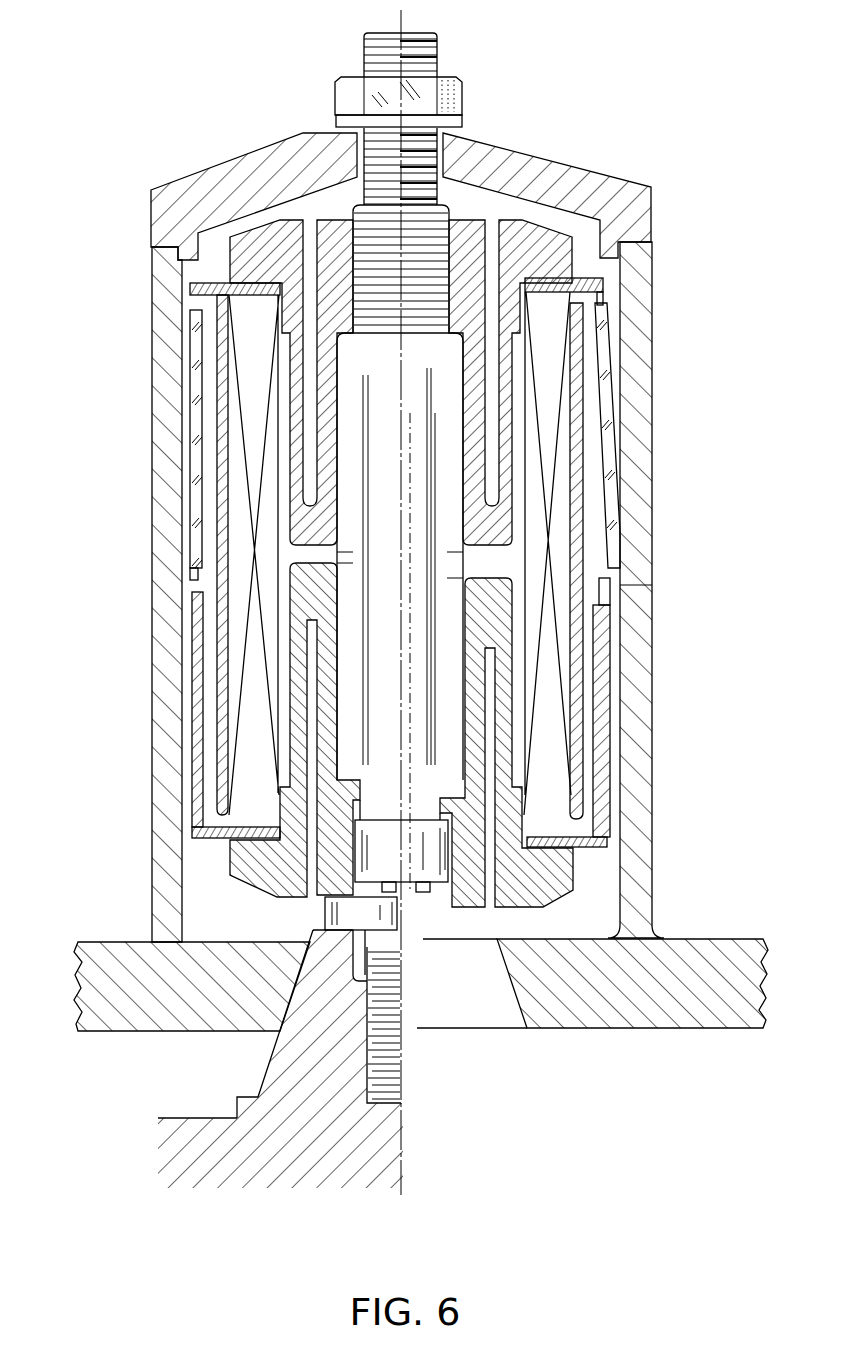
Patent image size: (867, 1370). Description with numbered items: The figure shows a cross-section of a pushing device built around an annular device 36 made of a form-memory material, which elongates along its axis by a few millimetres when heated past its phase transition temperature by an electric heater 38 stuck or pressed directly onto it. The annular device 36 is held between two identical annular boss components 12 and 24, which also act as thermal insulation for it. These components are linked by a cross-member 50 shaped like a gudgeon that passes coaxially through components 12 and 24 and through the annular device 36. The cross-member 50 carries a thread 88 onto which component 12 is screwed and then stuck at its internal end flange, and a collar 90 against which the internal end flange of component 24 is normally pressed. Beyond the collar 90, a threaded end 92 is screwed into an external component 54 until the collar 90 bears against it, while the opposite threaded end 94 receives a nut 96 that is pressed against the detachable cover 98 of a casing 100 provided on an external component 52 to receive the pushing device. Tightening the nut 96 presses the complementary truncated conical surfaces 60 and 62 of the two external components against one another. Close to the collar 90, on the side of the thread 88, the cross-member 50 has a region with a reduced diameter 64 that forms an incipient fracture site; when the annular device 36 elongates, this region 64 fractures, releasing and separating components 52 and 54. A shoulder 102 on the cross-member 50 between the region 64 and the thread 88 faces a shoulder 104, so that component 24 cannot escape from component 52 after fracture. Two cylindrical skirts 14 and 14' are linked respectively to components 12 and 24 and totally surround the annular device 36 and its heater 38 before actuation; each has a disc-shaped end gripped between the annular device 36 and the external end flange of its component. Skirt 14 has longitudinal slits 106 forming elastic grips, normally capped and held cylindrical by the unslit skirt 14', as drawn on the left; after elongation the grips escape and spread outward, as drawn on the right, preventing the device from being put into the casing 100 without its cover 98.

The annular component 12 is at (553, 231).
The cylindrical skirt 14 is at (465, 526).
The cylindrical skirt 14' is at (466, 712).
The annular component 24 is at (557, 908).
The annular device 36 is at (247, 387).
The electric heater 38 is at (577, 382).
The cross-member 50 is at (360, 515).
The external component 52 is at (123, 1010).
The external component 54 is at (185, 1155).
The truncated conical surface 60 is at (526, 1025).
The truncated conical surface 62 is at (277, 993).
The region with a reduced diameter 64 is at (403, 892).
The thread 88 is at (368, 232).
The collar 90 is at (327, 912).
The threaded end 92 is at (393, 1068).
The opposite end 94 is at (428, 160).
The nut 96 is at (342, 91).
The detachable cover 98 is at (272, 170).
The casing 100 is at (172, 686).
The shoulder 102 is at (388, 812).
The shoulder 104 is at (448, 838).
The longitudinal slits 106 is at (607, 490).